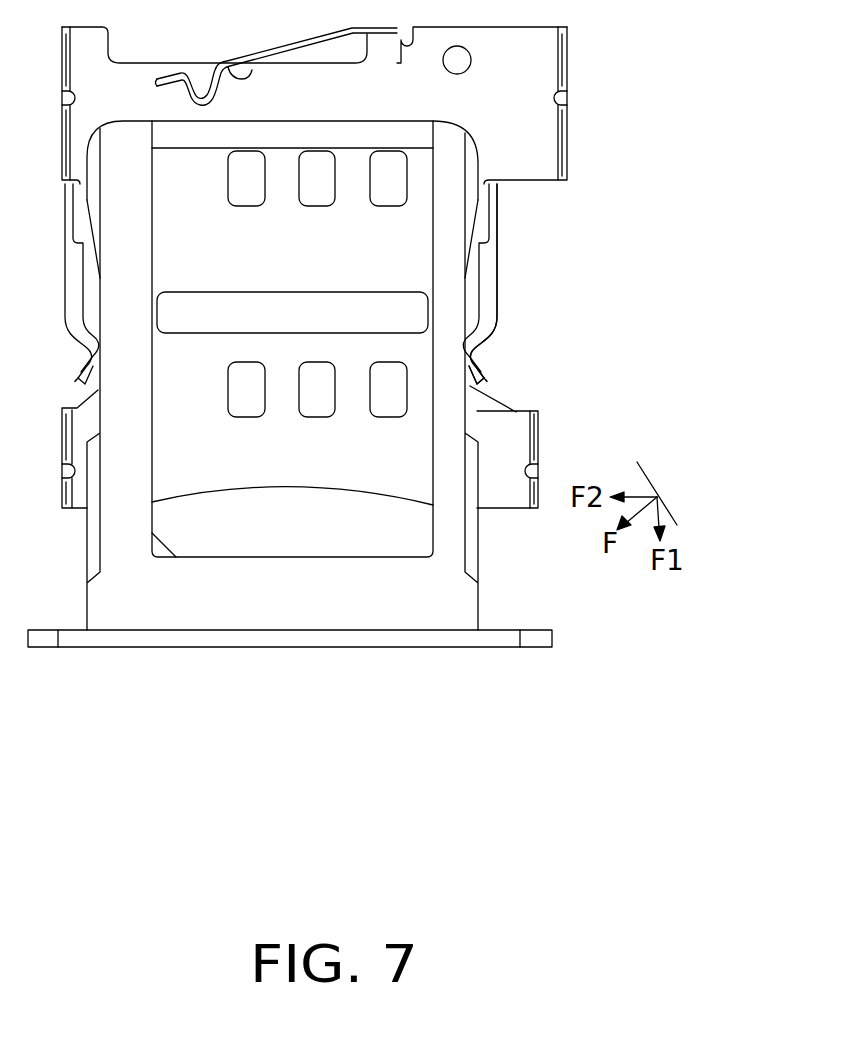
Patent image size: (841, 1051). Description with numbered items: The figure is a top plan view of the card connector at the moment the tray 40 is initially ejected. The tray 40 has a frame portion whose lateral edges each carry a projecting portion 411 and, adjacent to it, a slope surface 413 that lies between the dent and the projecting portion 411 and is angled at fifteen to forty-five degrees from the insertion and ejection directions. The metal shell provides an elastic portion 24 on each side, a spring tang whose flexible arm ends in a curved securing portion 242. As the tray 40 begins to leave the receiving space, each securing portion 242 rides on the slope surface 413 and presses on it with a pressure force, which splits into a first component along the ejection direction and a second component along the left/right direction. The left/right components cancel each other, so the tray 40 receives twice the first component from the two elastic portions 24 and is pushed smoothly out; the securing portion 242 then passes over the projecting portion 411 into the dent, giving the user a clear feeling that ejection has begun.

The elastic portion 24 is at (497, 263).
The securing portion 242 is at (480, 358).
The tray 40 is at (257, 598).
The projecting portion 411 is at (480, 400).
The slope surface 413 is at (493, 380).